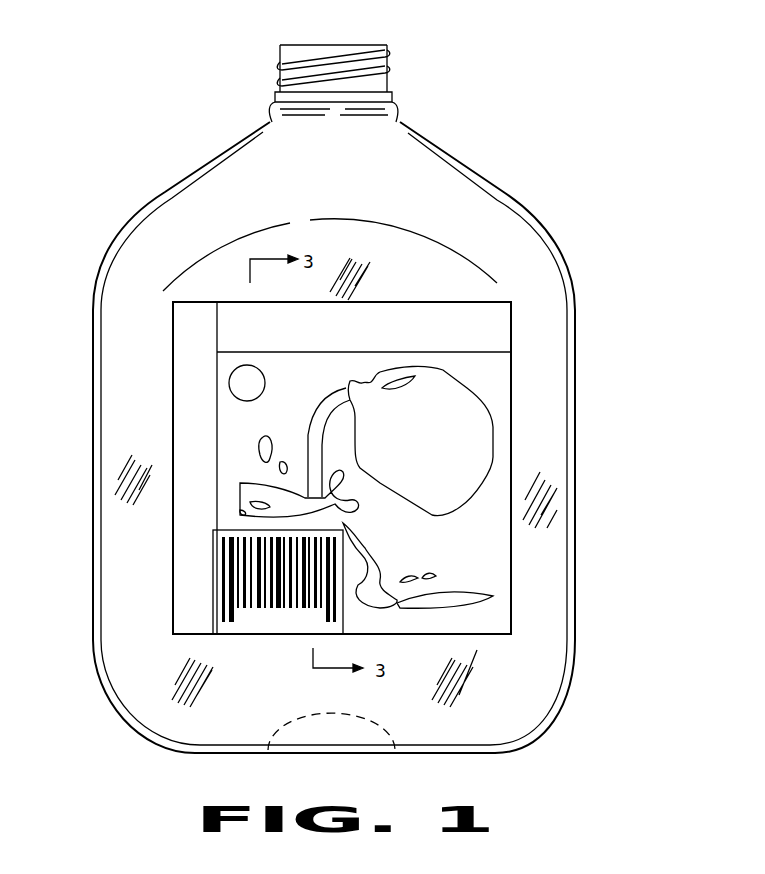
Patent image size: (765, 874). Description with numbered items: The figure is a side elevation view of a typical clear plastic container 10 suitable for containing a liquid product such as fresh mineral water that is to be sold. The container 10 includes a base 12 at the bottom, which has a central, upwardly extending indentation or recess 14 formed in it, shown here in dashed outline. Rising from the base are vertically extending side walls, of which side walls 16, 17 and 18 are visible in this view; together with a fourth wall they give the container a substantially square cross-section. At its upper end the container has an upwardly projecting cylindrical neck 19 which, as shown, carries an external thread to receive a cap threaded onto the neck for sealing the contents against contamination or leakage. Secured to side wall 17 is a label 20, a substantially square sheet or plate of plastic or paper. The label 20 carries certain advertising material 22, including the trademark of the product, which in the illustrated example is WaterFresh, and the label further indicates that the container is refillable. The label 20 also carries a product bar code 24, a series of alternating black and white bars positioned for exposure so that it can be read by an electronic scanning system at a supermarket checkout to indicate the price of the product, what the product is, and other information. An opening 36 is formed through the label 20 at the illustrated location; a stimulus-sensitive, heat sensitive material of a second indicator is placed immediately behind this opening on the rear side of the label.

The container 10 is at (548, 211).
The base 12 is at (190, 755).
The recess 14 is at (362, 724).
The side wall 16 is at (93, 381).
The side wall 17 is at (434, 271).
The side wall 18 is at (575, 471).
The cylindrical neck 19 is at (385, 55).
The label 20 is at (513, 373).
The advertising material 22 is at (444, 521).
The product bar code 24 is at (216, 580).
The opening 36 is at (252, 372).